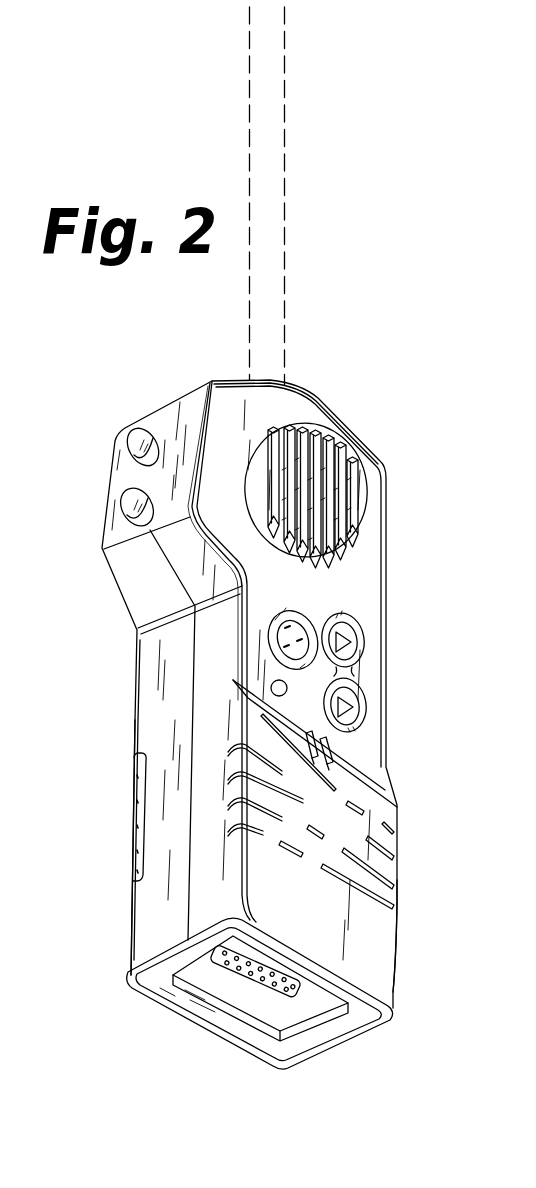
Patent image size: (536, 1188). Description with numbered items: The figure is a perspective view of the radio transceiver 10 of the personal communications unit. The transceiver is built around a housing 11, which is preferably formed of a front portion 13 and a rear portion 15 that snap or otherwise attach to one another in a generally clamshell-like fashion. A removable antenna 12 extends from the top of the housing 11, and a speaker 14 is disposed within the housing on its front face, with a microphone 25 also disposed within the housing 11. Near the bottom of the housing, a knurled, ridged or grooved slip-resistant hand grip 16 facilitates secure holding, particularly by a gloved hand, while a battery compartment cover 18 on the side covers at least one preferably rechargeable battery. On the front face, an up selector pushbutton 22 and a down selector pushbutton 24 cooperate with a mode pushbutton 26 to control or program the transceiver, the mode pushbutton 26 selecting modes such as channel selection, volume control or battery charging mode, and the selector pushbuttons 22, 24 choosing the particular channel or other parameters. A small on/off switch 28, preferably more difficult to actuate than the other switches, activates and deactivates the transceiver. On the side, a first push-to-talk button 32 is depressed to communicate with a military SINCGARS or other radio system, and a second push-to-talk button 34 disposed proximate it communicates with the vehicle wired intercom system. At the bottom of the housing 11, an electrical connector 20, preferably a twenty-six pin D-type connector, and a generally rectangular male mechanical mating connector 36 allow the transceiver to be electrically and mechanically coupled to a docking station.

The radio transceiver 10 is at (111, 659).
The housing 11 is at (380, 521).
The removable antenna 12 is at (285, 310).
The front portion 13 is at (395, 952).
The speaker 14 is at (332, 455).
The rear portion 15 is at (136, 935).
The hand grip 16 is at (378, 868).
The battery compartment cover 18 is at (131, 824).
The electrical connector 20 is at (292, 996).
The up selector pushbutton 22 is at (350, 643).
The down selector pushbutton 24 is at (355, 712).
The microphone 25 is at (335, 744).
The mode pushbutton 26 is at (300, 630).
The on/off switch 28 is at (288, 687).
The first push-to-talk button 32 is at (135, 449).
The second push-to-talk button 34 is at (130, 500).
The male mechanical mating connector 36 is at (204, 1006).